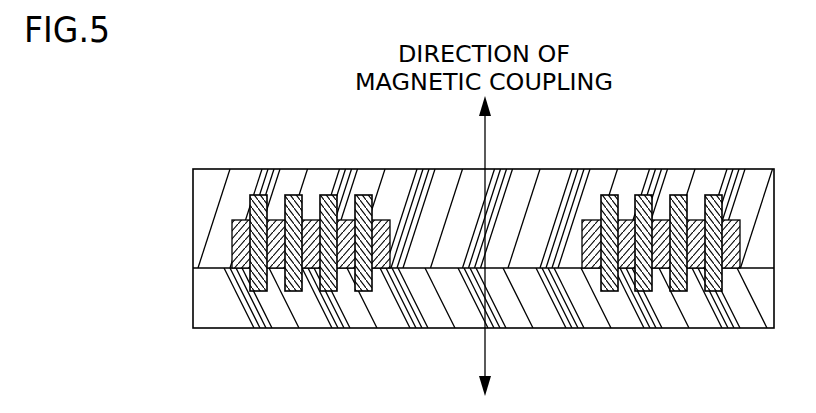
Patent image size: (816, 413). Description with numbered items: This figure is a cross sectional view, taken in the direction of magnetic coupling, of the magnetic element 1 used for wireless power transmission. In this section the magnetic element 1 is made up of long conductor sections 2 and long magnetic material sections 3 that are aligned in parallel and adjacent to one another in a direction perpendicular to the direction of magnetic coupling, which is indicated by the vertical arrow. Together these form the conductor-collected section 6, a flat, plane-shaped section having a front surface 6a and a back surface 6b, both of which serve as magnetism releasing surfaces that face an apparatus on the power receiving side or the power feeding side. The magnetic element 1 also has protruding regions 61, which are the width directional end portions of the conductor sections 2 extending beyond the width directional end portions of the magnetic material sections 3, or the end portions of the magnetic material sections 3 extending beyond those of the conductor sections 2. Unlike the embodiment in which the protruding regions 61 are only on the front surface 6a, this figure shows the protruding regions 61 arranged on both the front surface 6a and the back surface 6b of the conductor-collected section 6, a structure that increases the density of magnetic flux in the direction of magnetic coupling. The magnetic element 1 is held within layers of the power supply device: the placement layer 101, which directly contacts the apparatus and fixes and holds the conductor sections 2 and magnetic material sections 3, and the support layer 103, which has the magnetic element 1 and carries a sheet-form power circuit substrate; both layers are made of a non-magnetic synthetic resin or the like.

The magnetic element 1 is at (632, 158).
The conductor section 2 is at (250, 202).
The magnetic material section 3 is at (233, 230).
The conductor-collected section 6 is at (421, 233).
The front surface 6a is at (330, 177).
The back surface 6b is at (303, 302).
The protruding region 61 is at (402, 177).
The placement layer 101 is at (292, 177).
The support layer 103 is at (227, 317).